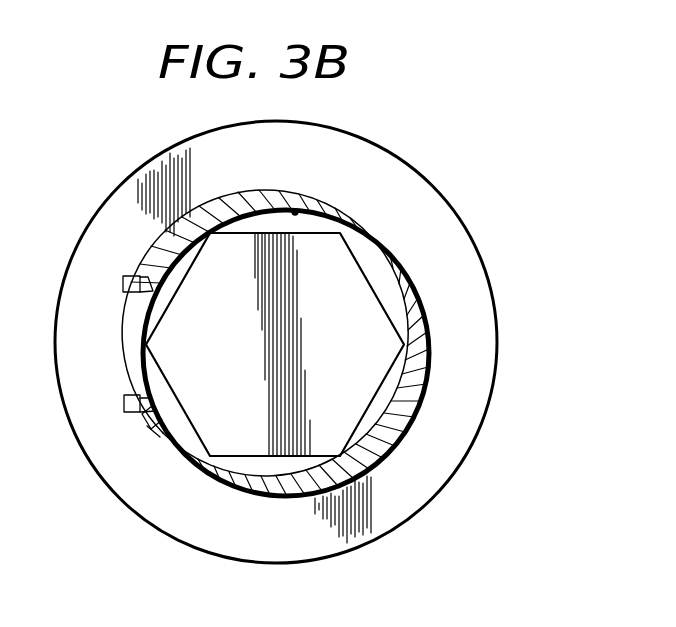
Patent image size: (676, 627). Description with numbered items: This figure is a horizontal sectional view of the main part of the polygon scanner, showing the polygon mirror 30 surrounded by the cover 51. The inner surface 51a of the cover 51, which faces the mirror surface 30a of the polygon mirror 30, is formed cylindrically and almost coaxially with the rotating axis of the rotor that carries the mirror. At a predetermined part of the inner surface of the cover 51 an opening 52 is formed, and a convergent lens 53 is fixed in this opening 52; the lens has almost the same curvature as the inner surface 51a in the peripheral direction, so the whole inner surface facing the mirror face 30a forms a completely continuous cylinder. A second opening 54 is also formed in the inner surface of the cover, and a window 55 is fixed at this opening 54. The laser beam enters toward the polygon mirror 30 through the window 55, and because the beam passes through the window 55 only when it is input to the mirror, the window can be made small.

The cover 51 is at (457, 233).
The inner surface 51a is at (297, 210).
The polygon mirror 30 is at (365, 330).
The mirror surface 30a is at (384, 381).
The opening 52 is at (132, 298).
The convergent lens 53 is at (117, 344).
The opening 54 is at (149, 429).
The window 55 is at (152, 426).